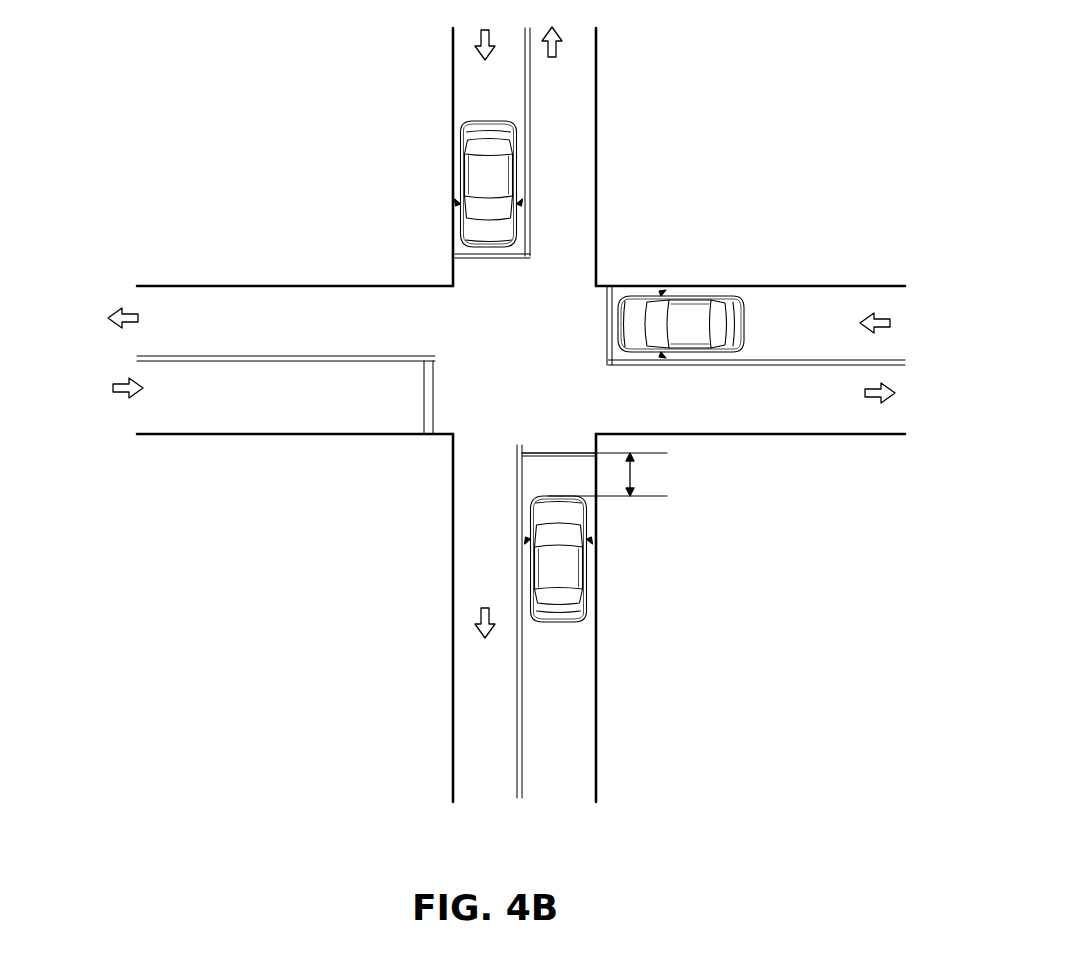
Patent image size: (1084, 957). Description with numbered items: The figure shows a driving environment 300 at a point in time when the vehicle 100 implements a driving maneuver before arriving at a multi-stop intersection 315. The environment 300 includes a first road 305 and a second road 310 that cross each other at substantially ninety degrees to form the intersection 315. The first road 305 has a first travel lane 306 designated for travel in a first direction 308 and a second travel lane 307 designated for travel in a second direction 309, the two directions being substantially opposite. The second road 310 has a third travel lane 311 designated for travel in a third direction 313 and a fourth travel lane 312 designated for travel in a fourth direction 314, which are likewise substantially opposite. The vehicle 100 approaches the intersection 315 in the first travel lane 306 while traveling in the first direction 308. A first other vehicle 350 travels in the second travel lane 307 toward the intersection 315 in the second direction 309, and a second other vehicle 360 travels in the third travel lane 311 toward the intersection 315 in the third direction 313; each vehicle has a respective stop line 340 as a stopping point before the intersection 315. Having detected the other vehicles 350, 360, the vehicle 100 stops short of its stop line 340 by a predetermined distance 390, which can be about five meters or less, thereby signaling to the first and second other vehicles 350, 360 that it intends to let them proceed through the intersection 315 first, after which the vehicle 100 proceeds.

The vehicle 100 is at (583, 573).
The driving environment 300 is at (803, 77).
The first road 305 is at (447, 521).
The first travel lane 306 is at (578, 635).
The second travel lane 307 is at (468, 565).
The first direction 308 is at (563, 55).
The second direction 309 is at (478, 624).
The second road 310 is at (757, 286).
The third travel lane 311 is at (805, 286).
The fourth travel lane 312 is at (787, 405).
The third direction 313 is at (890, 286).
The fourth direction 314 is at (885, 405).
The intersection 315 is at (481, 312).
The stop line 340 is at (455, 257).
The first other vehicle 350 is at (462, 184).
The second other vehicle 360 is at (640, 286).
The predetermined distance 390 is at (632, 475).